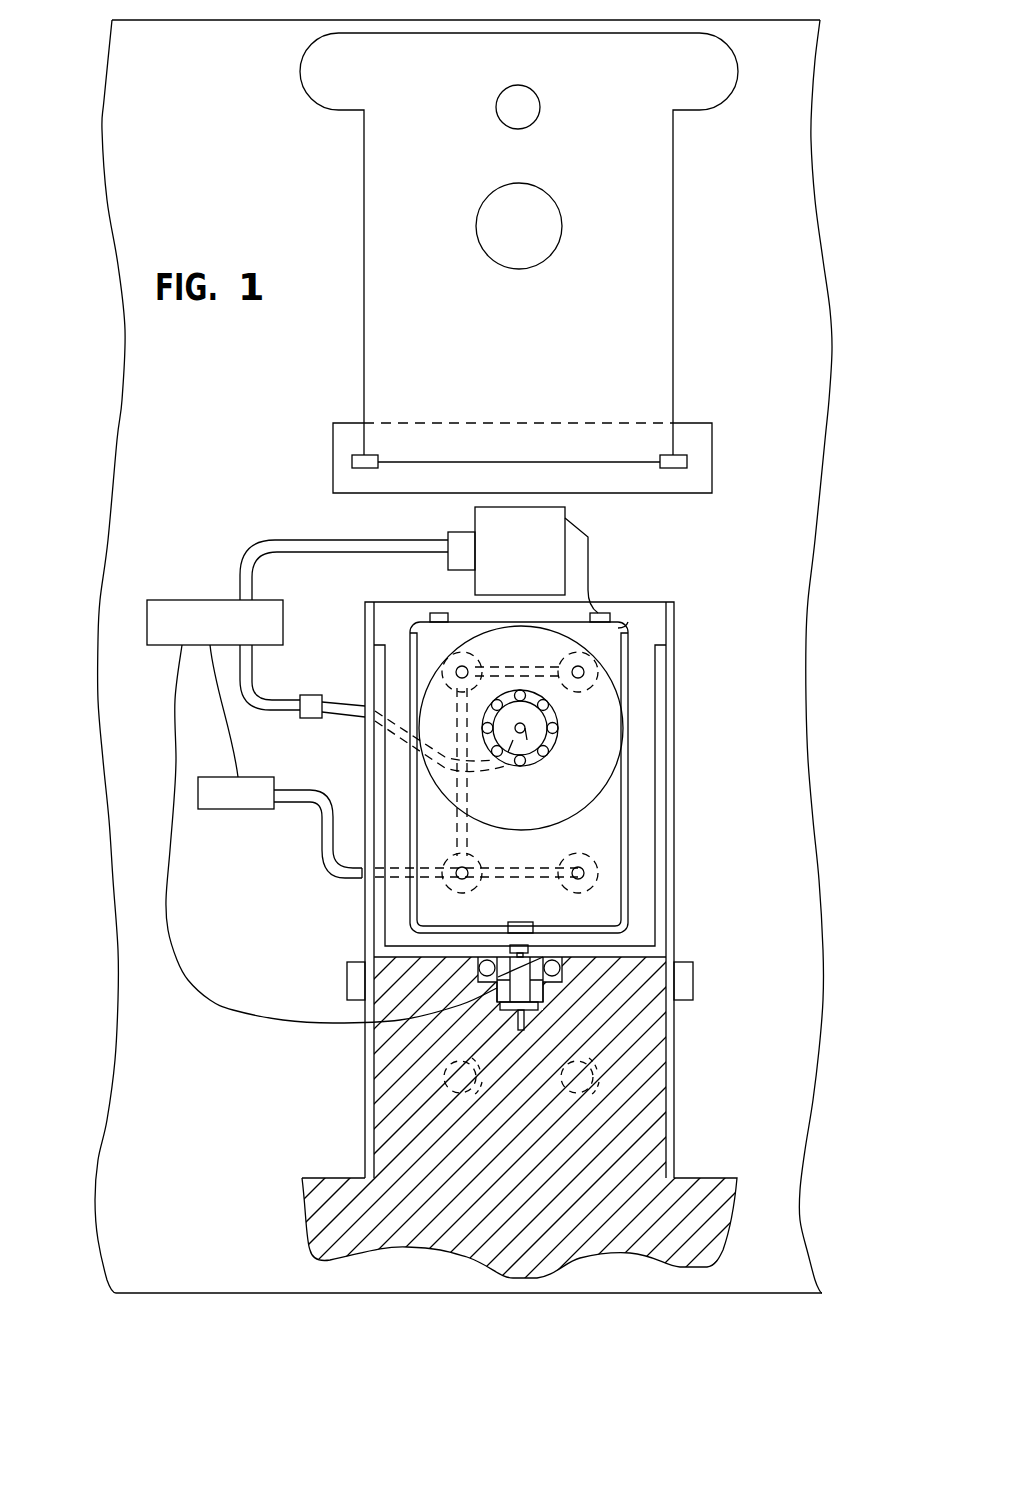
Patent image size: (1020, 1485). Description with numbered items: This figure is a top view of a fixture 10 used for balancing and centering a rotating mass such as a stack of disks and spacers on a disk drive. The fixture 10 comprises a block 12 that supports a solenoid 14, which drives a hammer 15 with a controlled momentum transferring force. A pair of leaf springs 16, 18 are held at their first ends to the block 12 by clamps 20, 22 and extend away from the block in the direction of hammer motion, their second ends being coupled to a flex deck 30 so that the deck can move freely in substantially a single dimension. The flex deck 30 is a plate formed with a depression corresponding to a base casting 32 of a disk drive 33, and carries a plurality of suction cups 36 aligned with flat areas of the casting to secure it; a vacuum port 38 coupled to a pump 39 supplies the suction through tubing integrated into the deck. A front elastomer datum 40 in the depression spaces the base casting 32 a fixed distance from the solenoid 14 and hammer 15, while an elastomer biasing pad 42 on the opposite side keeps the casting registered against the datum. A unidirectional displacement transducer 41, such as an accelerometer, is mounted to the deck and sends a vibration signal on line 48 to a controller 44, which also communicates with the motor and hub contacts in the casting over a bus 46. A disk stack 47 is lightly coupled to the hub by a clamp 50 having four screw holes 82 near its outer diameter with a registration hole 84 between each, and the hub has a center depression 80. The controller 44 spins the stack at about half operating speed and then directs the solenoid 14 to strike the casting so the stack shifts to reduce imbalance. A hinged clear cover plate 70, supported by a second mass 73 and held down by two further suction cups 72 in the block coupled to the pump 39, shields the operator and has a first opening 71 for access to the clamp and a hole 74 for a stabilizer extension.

The fixture 10 is at (806, 622).
The block 12 is at (718, 1178).
The solenoid 14 is at (543, 992).
The hammer 15 is at (530, 947).
The leaf spring 16 is at (674, 768).
The leaf spring 18 is at (365, 767).
The clamp 20 is at (693, 978).
The clamp 22 is at (347, 978).
The flex deck 30 is at (635, 606).
The base casting 32 is at (422, 620).
The disk drive 33 is at (630, 622).
The suction cups 36 is at (575, 660).
The vacuum port 38 is at (358, 880).
The pump 39 is at (232, 809).
The front elastomer datum 40 is at (510, 921).
The unidirectional displacement transducer 41 is at (523, 560).
The elastomer biasing pad 42 is at (602, 613).
The controller 44 is at (184, 600).
The bus 46 is at (265, 692).
The disk stack 47 is at (588, 808).
The line 48 is at (356, 540).
The clamp 50 is at (533, 765).
The hinged cover plate 70 is at (673, 222).
The first opening 71 is at (556, 198).
The suction cups 72 is at (442, 1070).
The second mass 73 is at (712, 440).
The hole 74 is at (540, 107).
The center depression 80 is at (525, 725).
The screw holes 82 is at (558, 730).
The registration hole 84 is at (547, 755).